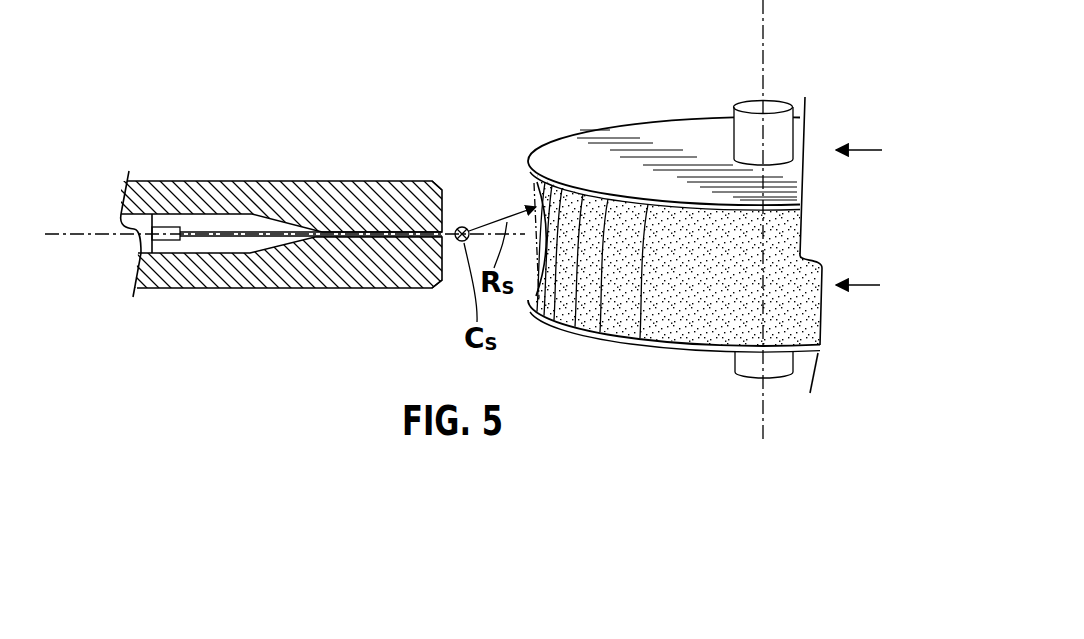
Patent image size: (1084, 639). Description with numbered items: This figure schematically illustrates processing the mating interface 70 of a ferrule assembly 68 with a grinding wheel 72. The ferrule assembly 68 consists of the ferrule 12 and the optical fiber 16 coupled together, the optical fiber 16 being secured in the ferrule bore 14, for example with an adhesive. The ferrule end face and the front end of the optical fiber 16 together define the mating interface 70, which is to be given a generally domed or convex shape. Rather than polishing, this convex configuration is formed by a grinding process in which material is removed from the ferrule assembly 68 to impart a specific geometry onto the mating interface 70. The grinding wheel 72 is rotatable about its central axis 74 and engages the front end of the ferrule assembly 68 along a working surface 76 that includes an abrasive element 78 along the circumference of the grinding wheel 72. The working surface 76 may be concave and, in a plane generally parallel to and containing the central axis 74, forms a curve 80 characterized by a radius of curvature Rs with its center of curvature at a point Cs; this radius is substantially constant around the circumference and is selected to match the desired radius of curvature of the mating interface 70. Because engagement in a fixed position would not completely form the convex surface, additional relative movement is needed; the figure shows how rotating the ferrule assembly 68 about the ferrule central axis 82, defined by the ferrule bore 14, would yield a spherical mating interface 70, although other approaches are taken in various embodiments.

The ferrule 12 is at (328, 182).
The ferrule bore 14 is at (457, 242).
The optical fiber 16 is at (210, 238).
The ferrule assembly 68 is at (112, 167).
The mating interface 70 is at (444, 206).
The grinding wheel 72 is at (704, 88).
The central axis 74 is at (766, 22).
The working surface 76 is at (683, 290).
The abrasive element 78 is at (618, 310).
The curve 80 is at (523, 158).
The ferrule central axis 82 is at (85, 236).